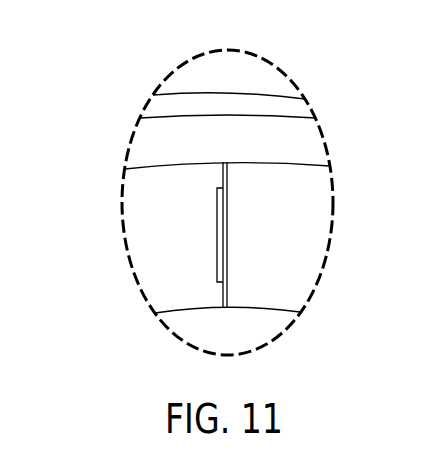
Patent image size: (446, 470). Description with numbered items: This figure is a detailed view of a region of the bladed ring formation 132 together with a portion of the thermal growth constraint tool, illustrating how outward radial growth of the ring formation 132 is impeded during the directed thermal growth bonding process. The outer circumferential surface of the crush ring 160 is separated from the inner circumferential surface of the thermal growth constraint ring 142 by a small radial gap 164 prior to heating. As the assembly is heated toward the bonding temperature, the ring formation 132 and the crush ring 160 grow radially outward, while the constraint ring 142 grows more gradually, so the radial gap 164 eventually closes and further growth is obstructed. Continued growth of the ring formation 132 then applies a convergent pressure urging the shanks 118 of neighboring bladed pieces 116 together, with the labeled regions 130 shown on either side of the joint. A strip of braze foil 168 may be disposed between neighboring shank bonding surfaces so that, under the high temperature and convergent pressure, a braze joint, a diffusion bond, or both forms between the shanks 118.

The thermal growth constraint ring 142 is at (248, 65).
The radial gap 164 is at (302, 108).
The crush ring 160 is at (318, 142).
The bladed pieces 116 is at (330, 207).
The braze foil 168 is at (219, 200).
The chambers 130 is at (197, 248).
The shanks 118 is at (255, 283).
The ring formation 132 is at (138, 254).